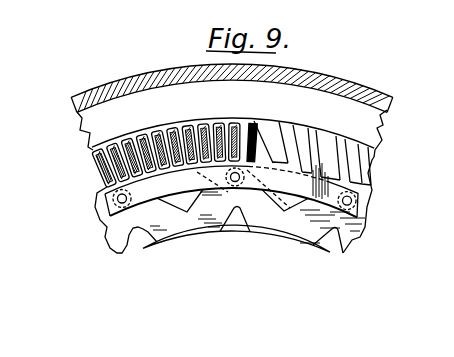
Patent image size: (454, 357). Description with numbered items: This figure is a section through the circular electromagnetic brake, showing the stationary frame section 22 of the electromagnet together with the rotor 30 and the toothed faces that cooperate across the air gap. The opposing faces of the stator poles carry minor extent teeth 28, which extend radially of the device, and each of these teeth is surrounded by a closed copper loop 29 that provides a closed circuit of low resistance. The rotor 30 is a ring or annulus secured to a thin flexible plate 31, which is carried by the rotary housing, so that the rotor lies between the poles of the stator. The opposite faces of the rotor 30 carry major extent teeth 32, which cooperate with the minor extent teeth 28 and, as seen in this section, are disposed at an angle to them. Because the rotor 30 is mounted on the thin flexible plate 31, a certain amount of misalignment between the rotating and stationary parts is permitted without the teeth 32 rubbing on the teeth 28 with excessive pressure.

The frame section 22 is at (83, 133).
The minor extent teeth 28 is at (125, 173).
The closed copper loop 29 is at (118, 177).
The rotor 30 is at (371, 167).
The thin flexible plate 31 is at (372, 226).
The major extent teeth 32 is at (299, 138).